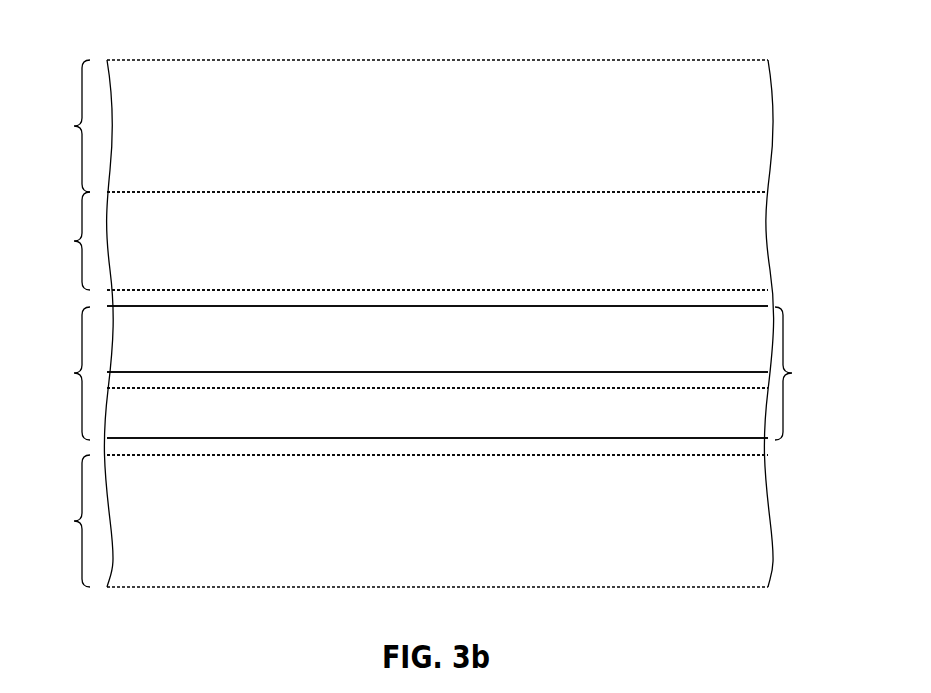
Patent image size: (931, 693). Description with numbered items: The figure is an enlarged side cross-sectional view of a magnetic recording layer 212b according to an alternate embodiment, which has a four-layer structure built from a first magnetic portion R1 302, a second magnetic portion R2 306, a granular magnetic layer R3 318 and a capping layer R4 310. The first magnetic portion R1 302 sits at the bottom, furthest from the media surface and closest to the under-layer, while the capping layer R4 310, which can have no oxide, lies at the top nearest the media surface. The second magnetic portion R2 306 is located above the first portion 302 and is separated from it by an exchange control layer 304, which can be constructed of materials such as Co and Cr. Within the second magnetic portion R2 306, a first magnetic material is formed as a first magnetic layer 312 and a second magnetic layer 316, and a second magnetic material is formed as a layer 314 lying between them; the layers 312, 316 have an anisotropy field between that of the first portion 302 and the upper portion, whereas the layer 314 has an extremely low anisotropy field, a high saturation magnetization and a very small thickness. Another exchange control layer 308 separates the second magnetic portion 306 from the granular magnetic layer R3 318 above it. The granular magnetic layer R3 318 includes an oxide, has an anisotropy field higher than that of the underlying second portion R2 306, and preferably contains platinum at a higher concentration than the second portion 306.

The magnetic recording layer 212b is at (208, 60).
The first magnetic portion 302 is at (467, 522).
The exchange control layer 304 is at (592, 445).
The second magnetic portion 306 is at (790, 314).
The exchange control layer 308 is at (587, 297).
The capping layer 310 is at (463, 126).
The first magnetic layer 312 is at (467, 416).
The second magnetic material layer 314 is at (597, 382).
The second magnetic layer 316 is at (466, 342).
The granular magnetic layer 318 is at (480, 241).
The first magnetic portion R1 is at (80, 473).
The second magnetic portion R2 is at (80, 335).
The granular magnetic layer R3 is at (80, 203).
The capping layer R4 is at (80, 81).